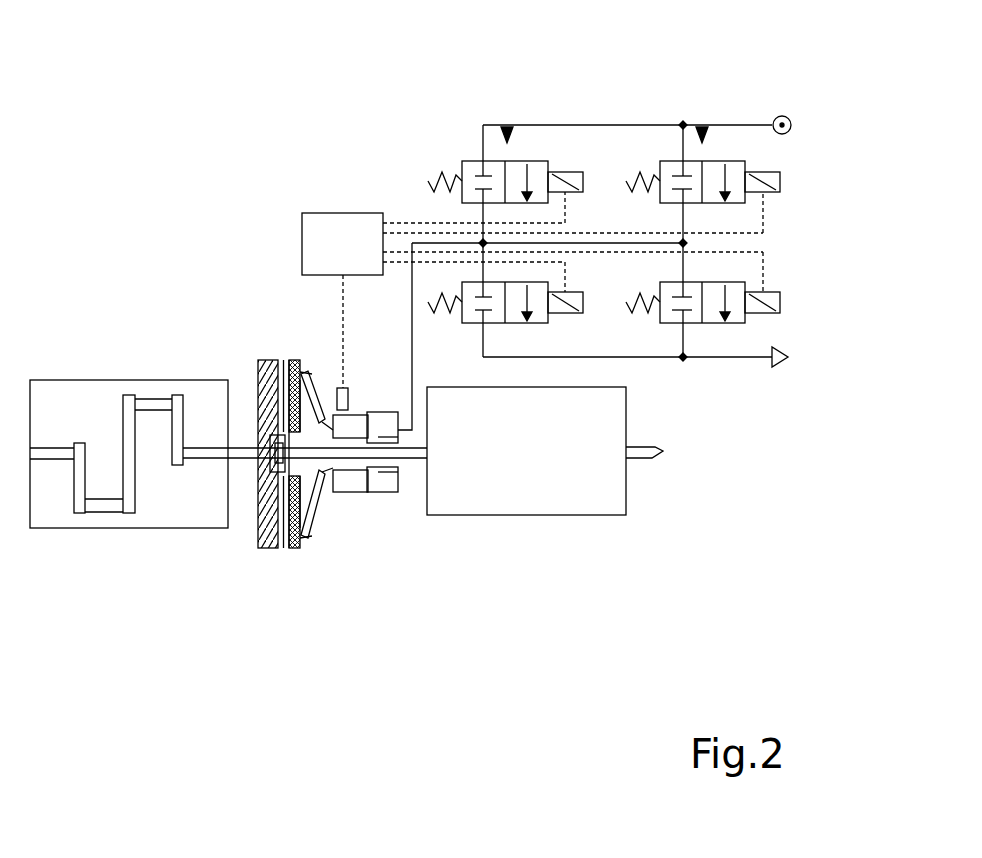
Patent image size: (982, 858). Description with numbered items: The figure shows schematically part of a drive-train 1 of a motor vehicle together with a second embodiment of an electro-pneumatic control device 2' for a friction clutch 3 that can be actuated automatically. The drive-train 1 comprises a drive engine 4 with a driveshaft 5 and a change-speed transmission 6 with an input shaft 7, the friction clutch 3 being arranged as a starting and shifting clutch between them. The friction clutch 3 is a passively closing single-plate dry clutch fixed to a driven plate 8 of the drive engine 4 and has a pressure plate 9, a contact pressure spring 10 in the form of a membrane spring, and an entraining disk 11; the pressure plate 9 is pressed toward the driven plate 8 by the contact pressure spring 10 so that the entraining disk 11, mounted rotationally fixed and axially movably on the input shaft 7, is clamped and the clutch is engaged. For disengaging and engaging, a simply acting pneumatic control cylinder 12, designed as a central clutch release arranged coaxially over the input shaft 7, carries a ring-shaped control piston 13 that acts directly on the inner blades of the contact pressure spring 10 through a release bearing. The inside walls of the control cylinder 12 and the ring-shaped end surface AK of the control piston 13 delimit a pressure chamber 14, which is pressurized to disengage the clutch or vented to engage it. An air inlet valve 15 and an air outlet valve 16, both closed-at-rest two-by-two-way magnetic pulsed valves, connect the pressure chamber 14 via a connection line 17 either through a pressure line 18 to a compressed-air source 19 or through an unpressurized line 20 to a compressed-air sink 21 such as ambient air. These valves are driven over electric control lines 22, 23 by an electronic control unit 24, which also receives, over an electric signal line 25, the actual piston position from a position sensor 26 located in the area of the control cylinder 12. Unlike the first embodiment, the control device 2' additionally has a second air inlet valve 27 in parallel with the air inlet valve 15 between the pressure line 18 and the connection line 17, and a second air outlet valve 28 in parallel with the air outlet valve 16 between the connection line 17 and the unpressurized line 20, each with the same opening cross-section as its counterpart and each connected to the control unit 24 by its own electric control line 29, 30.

The drive-train 1 is at (134, 611).
The control device 2' is at (340, 106).
The friction clutch 3 is at (284, 573).
The drive engine 4 is at (153, 493).
The driveshaft 5 is at (245, 463).
The change-speed transmission 6 is at (562, 515).
The input shaft 7 is at (413, 458).
The driven plate 8 is at (265, 551).
The pressure plate 9 is at (304, 537).
The contact pressure spring 10 is at (323, 475).
The entraining disk 11 is at (283, 360).
The control cylinder 12 is at (354, 522).
The control piston 13 is at (355, 415).
The pressure chamber 14 is at (383, 428).
The air inlet valve 15 is at (507, 127).
The air outlet valve 16 is at (576, 343).
The connection line 17 is at (432, 242).
The pressure line 18 is at (555, 125).
The compressed-air source 19 is at (812, 115).
The unpressurized line 20 is at (730, 358).
The compressed-air sink 21 is at (806, 368).
The electric control line 22 is at (567, 207).
The electric control line 23 is at (567, 275).
The electronic control unit 24 is at (342, 244).
The electric signal line 25 is at (343, 340).
The position sensor 26 is at (340, 386).
The second air inlet valve 27 is at (702, 127).
The second air outlet valve 28 is at (808, 303).
The electric control line 29 is at (763, 215).
The electric control line 30 is at (763, 270).
The end surface of the control piston AK is at (388, 493).